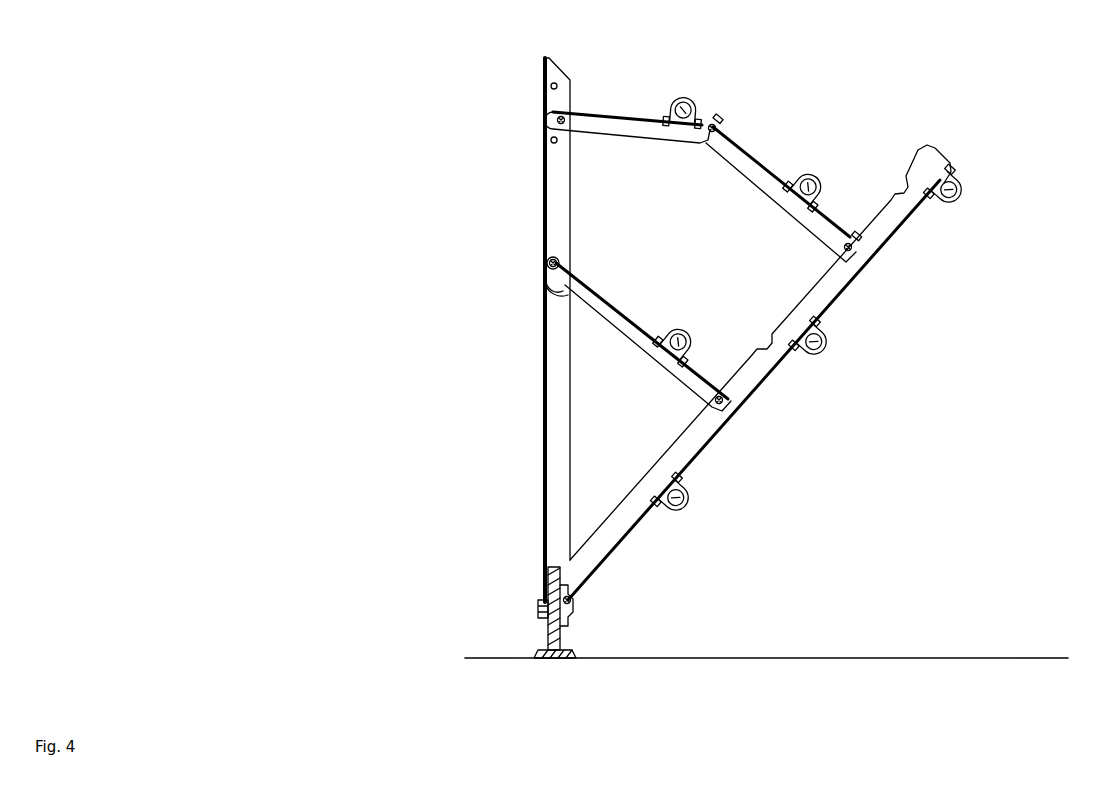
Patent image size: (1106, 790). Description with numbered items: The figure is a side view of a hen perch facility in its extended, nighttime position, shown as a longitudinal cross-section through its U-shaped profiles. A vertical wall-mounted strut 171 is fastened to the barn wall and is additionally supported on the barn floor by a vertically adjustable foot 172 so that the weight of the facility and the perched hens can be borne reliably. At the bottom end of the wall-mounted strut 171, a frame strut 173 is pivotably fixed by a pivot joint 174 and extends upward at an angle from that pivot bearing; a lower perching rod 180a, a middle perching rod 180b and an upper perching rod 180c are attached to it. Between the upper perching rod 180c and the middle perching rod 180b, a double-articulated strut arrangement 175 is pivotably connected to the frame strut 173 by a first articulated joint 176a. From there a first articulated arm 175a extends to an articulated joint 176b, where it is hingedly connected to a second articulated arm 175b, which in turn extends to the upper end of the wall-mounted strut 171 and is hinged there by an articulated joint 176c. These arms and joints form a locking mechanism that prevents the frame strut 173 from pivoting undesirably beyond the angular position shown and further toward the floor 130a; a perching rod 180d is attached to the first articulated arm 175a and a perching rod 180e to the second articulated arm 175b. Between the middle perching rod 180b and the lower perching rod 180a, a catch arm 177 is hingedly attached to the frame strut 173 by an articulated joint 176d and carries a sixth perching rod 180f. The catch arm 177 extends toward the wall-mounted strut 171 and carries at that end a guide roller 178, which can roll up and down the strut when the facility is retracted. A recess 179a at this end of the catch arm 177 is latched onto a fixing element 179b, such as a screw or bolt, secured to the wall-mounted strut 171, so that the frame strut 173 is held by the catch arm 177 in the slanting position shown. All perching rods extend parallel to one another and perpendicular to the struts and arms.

The floor 130a is at (918, 657).
The wall-mounted strut 171 is at (558, 386).
The vertically adjustable foot 172 is at (547, 633).
The frame strut 173 is at (628, 513).
The pivot joint 174 is at (573, 602).
The double-articulated strut arrangement 175 is at (713, 141).
The first articulated arm 175a is at (826, 210).
The second articulated arm 175b is at (636, 130).
The first articulated joint 176a is at (856, 248).
The articulated joint 176b is at (717, 124).
The articulated joint 176c is at (556, 118).
The articulated joint 176d is at (735, 397).
The catch arm 177 is at (628, 313).
The guide roller 178 is at (548, 262).
The recess 179a is at (562, 297).
The fixing element 179b is at (560, 281).
The lower perching rod 180a is at (688, 494).
The middle perching rod 180b is at (820, 339).
The upper perching rod 180c is at (955, 184).
The perching rod 180d is at (805, 178).
The perching rod 180e is at (682, 105).
The sixth perching rod 180f is at (686, 333).